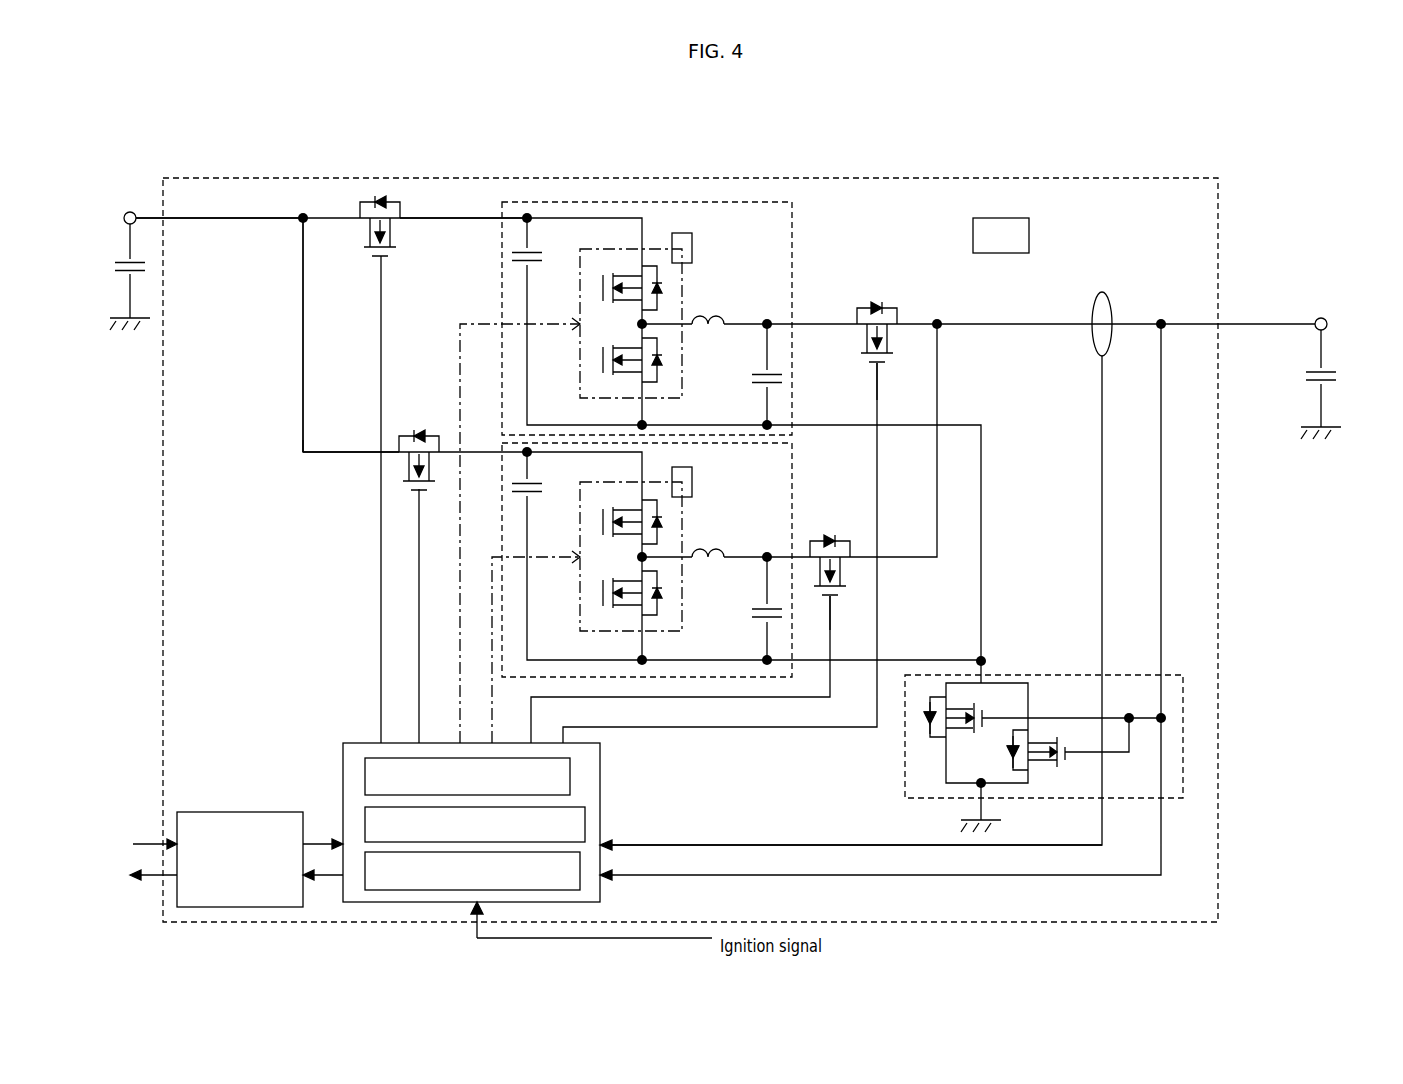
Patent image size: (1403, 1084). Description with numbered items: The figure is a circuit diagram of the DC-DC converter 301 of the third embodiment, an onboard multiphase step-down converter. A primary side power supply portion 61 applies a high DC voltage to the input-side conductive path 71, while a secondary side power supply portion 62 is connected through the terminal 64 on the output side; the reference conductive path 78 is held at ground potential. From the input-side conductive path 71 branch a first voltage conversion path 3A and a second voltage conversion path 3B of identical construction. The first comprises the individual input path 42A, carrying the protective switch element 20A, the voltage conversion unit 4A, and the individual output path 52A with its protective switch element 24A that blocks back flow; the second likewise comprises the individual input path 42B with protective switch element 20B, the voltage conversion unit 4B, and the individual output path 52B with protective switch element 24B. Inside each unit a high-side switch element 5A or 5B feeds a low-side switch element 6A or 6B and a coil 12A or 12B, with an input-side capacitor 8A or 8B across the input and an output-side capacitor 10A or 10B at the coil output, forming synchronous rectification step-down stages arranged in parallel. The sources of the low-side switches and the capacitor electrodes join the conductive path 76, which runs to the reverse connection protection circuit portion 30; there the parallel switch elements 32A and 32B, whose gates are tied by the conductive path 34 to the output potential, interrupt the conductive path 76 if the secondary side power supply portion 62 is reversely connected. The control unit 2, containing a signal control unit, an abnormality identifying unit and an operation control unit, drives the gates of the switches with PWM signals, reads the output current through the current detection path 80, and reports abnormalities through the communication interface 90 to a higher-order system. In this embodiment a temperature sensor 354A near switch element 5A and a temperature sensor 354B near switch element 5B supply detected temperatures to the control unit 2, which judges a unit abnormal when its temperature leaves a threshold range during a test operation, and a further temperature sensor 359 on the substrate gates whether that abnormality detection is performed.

The control unit 2 is at (603, 770).
The first voltage conversion path 3A is at (445, 195).
The second voltage conversion path 3B is at (433, 412).
The voltage conversion unit 4A is at (792, 212).
The voltage conversion unit 4B is at (795, 466).
The switch element 5A is at (628, 278).
The switch element 5B is at (628, 512).
The switch element 6A is at (627, 372).
The switch element 6B is at (627, 605).
The input-side capacitor 8A is at (535, 262).
The input-side capacitor 8B is at (535, 493).
The output-side capacitor 10A is at (757, 372).
The output-side capacitor 10B is at (760, 617).
The coil 12A is at (717, 318).
The coil 12B is at (717, 552).
The protective switch element 20A is at (395, 241).
The protective switch element 20B is at (408, 465).
The protective switch element 24A is at (887, 337).
The protective switch element 24B is at (840, 568).
The reverse connection protection circuit portion 30 is at (1185, 790).
The switch element 32A is at (957, 728).
The switch element 32B is at (1042, 760).
The conductive path 34 is at (1050, 718).
The individual input path 42A is at (333, 228).
The individual input path 42B is at (333, 452).
The individual output path 52A is at (833, 324).
The individual output path 52B is at (798, 557).
The primary side power supply portion 61 is at (140, 263).
The secondary side power supply portion 62 is at (1328, 372).
The terminal 64 is at (1327, 318).
The input-side conductive path 71 is at (226, 213).
The conductive path 76 is at (985, 668).
The reference conductive path 78 is at (983, 817).
The current detection path 80 is at (797, 844).
The communication interface 90 is at (273, 907).
The DC-DC converter 301 is at (1112, 178).
The temperature sensor 354A is at (692, 240).
The temperature sensor 354B is at (692, 477).
The temperature sensor 359 is at (1029, 235).